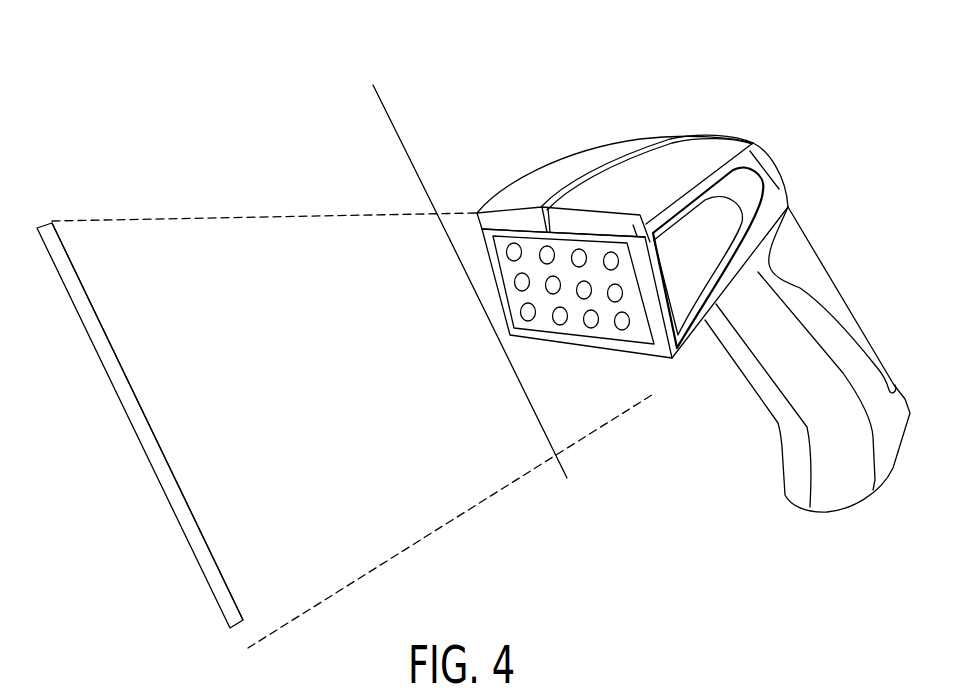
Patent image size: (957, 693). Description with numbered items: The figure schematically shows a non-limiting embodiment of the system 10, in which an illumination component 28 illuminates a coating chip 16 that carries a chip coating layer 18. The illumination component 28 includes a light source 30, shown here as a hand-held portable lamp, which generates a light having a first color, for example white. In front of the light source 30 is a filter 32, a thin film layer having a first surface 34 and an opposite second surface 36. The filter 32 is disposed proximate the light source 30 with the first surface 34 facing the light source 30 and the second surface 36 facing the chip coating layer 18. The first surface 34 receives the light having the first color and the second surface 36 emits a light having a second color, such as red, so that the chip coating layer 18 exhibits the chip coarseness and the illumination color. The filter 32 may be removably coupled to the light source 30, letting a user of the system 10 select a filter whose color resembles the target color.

The system 10 is at (693, 331).
The coating chip 16 is at (133, 425).
The chip coating layer 18 is at (75, 275).
The illumination component 28 is at (773, 134).
The light source 30 is at (581, 250).
The filter 32 is at (437, 240).
The first surface 34 is at (407, 155).
The second surface 36 is at (545, 437).